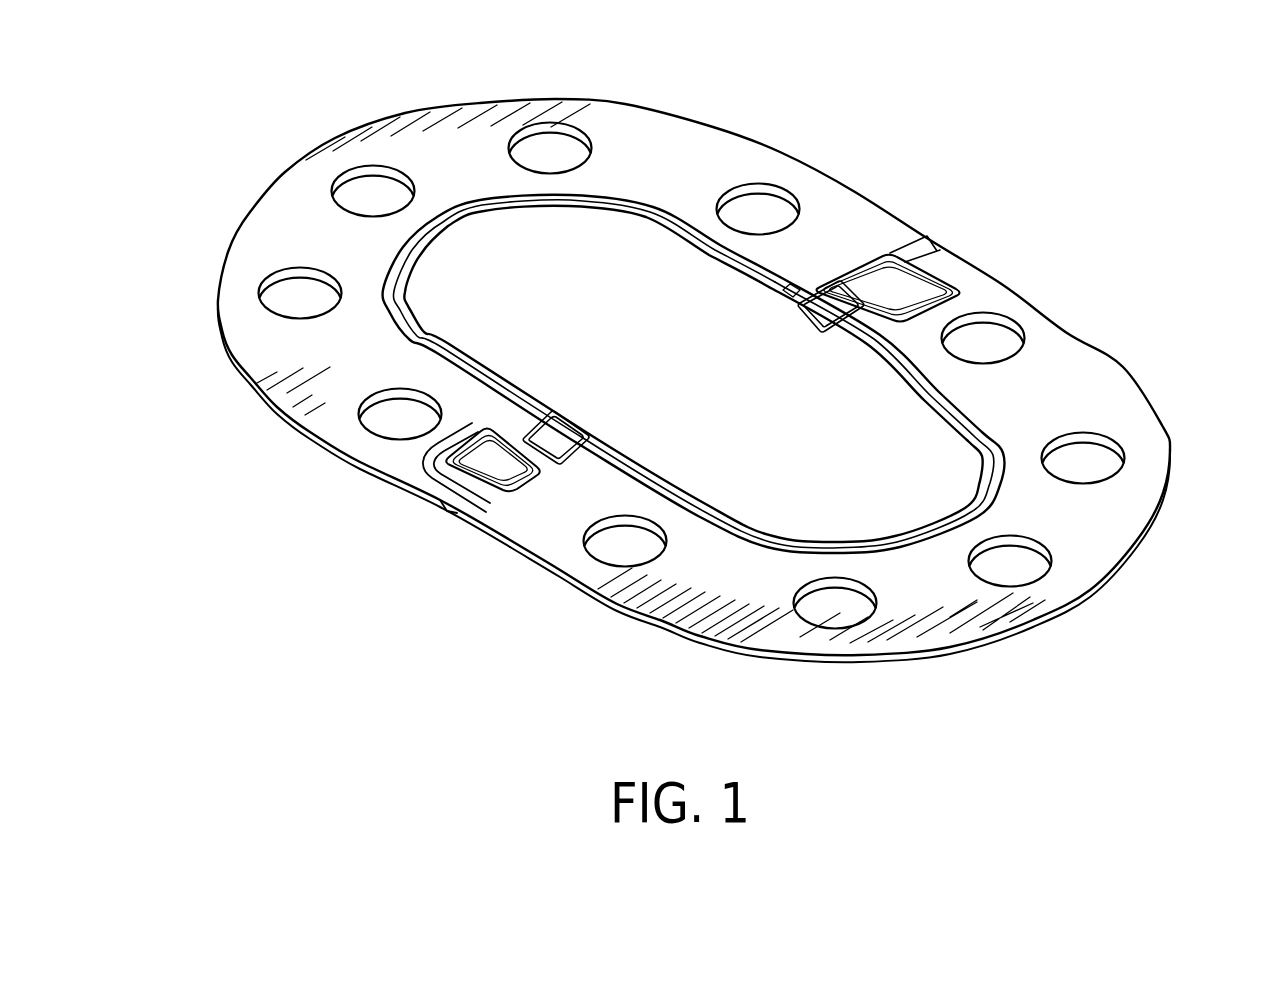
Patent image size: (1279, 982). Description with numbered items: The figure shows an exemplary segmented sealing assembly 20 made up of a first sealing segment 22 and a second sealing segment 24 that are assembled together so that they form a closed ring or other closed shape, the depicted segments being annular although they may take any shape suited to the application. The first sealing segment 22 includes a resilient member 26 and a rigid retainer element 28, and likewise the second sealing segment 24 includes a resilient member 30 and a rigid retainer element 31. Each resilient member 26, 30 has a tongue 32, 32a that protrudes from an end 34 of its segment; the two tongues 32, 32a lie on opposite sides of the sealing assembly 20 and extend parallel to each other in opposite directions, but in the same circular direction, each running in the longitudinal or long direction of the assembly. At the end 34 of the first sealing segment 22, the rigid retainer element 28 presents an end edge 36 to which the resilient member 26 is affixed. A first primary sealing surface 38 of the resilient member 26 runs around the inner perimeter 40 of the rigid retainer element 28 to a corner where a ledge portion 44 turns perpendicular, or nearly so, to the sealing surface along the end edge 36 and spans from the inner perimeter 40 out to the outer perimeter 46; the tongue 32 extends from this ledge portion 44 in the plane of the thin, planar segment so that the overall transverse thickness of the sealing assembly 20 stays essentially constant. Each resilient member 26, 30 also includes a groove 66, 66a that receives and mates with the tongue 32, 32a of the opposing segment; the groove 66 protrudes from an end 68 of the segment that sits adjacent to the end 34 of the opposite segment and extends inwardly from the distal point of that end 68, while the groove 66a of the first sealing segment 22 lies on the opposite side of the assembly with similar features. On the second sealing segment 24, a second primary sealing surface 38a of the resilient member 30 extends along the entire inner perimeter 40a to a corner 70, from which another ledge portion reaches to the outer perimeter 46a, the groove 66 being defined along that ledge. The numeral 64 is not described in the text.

The segmented sealing assembly 20 is at (183, 125).
The first sealing segment 22 is at (261, 343).
The second sealing segment 24 is at (1085, 540).
The resilient member 26 is at (412, 260).
The rigid retainer element 28 is at (333, 420).
The resilient member 30 is at (965, 428).
The rigid retainer element 31 is at (1117, 403).
The tongue 32 is at (908, 258).
The tongue 32a is at (502, 467).
The end 34 is at (832, 206).
The end edge 36 is at (910, 238).
The first primary sealing surface 38 is at (483, 208).
The second primary sealing surface 38a is at (1010, 470).
The inner perimeter 40 is at (648, 212).
The inner perimeter 40a is at (900, 533).
The ledge portion 44 is at (890, 283).
The outer perimeter 46 is at (772, 140).
The outer perimeter 46a is at (843, 655).
The edge 64 is at (323, 447).
The groove 66 is at (860, 327).
The groove 66a is at (437, 442).
The end 68 is at (993, 287).
The corner 70 is at (787, 294).